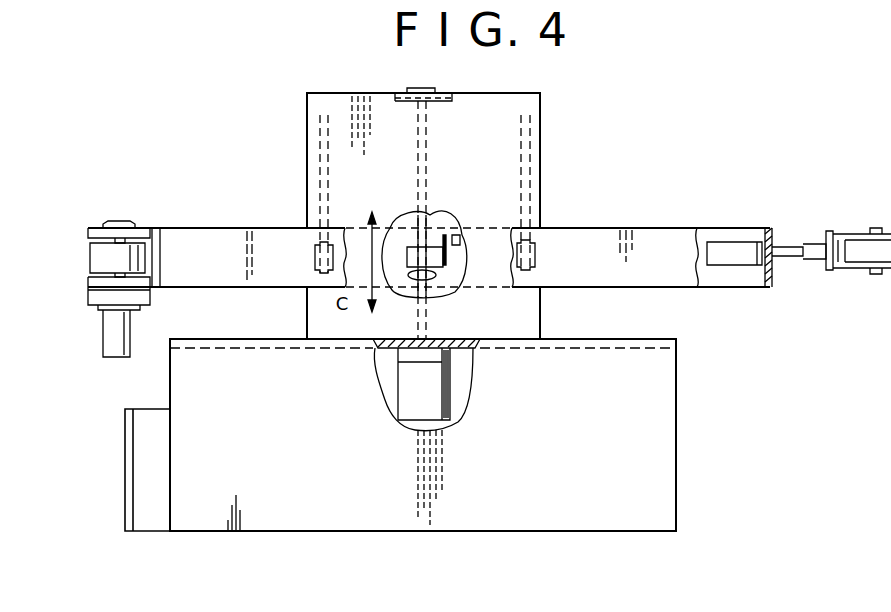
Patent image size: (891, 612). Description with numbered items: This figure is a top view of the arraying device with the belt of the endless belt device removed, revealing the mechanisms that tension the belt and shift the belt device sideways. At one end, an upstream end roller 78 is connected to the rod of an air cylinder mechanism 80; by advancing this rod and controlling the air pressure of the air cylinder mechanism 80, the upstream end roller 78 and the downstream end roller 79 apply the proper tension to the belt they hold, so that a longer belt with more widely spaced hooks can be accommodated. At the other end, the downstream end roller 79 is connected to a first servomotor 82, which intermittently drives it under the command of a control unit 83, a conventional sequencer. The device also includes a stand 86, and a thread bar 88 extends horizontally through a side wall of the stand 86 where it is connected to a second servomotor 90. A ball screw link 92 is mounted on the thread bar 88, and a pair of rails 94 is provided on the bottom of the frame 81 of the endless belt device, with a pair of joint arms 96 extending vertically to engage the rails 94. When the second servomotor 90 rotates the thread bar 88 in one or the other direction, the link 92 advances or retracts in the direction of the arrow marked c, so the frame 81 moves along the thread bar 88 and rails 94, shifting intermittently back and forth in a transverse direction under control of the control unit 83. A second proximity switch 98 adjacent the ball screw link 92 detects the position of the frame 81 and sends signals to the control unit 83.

The upstream end roller 78 is at (850, 259).
The downstream end roller 79 is at (95, 262).
The air cylinder mechanism 80 is at (735, 250).
The frame 81 is at (210, 277).
The first servomotor 82 is at (103, 351).
The control unit 83 is at (140, 481).
The stand 86 is at (232, 533).
The thread bar 88 is at (418, 238).
The second servomotor 90 is at (450, 396).
The ball screw link 92 is at (433, 248).
The rails 94 is at (313, 256).
The joint arms 96 is at (312, 183).
The second proximity switch 98 is at (457, 241).